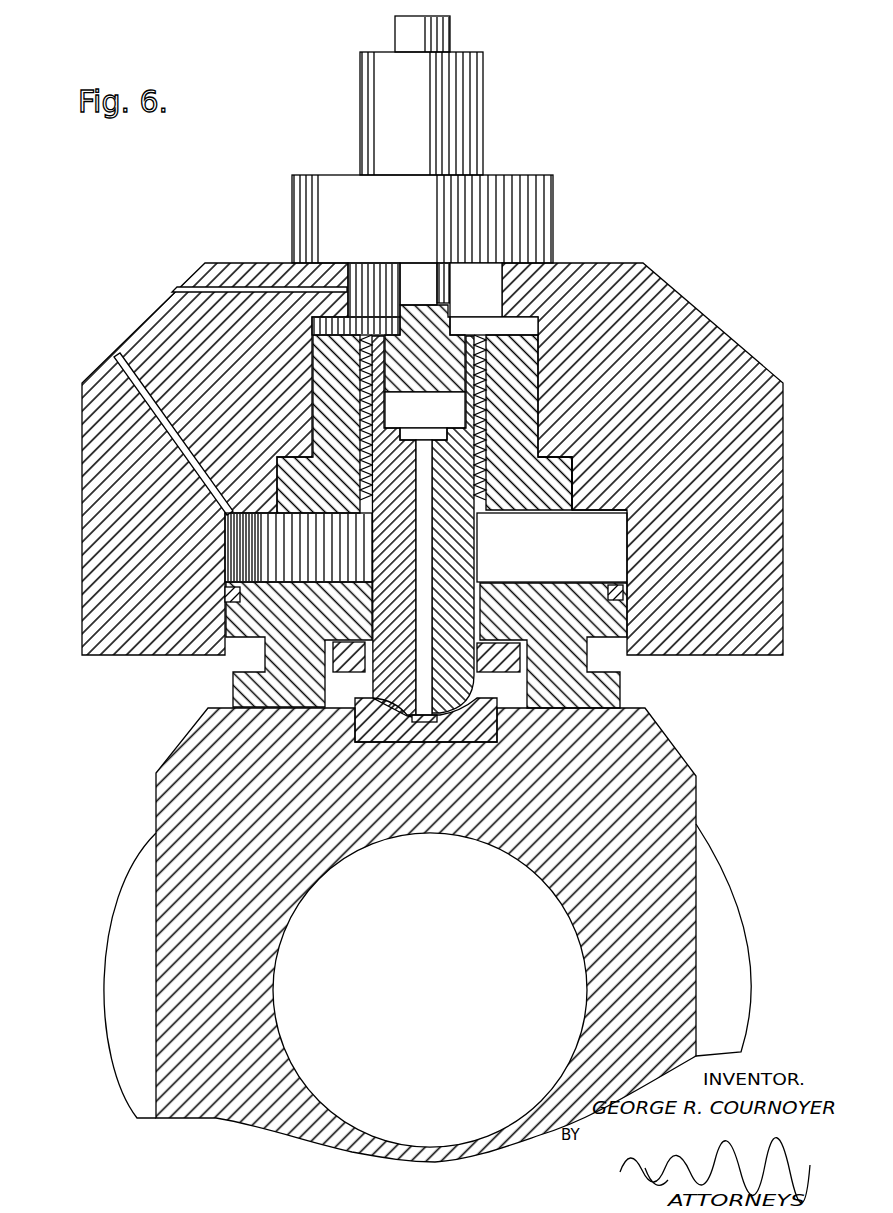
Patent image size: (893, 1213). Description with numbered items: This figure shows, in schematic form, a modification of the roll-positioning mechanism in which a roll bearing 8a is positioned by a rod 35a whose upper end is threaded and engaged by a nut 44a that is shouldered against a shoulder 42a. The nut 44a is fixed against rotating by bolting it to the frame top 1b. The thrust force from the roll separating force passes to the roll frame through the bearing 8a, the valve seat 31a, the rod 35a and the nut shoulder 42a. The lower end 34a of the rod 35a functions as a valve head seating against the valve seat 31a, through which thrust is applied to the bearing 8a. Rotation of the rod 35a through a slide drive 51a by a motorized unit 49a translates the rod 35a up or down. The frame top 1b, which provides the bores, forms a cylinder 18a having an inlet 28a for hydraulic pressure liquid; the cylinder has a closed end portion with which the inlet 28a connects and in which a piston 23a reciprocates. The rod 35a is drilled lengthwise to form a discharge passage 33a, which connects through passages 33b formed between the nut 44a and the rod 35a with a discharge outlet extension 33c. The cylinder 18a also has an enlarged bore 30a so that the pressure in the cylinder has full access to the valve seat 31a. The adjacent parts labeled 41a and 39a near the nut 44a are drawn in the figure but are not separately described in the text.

The motorized unit 49a is at (483, 113).
The discharge outlet extension 33c is at (190, 289).
The slide drive 51a is at (440, 292).
The frame top 1b is at (700, 338).
The passages 33b is at (378, 365).
The inlet 28a is at (138, 390).
The nut 44a is at (540, 379).
The stem nut 41a is at (540, 424).
The shoulder 42a is at (560, 458).
The ring 39a is at (573, 489).
The discharge passage 33a is at (428, 547).
The rod 35a is at (463, 566).
The cylinder 18a is at (620, 556).
The enlarged bore 30a is at (477, 608).
The piston 23a is at (600, 623).
The lower end of rod 34a is at (426, 670).
The valve seat 31a is at (483, 734).
The roll bearing 8a is at (680, 768).